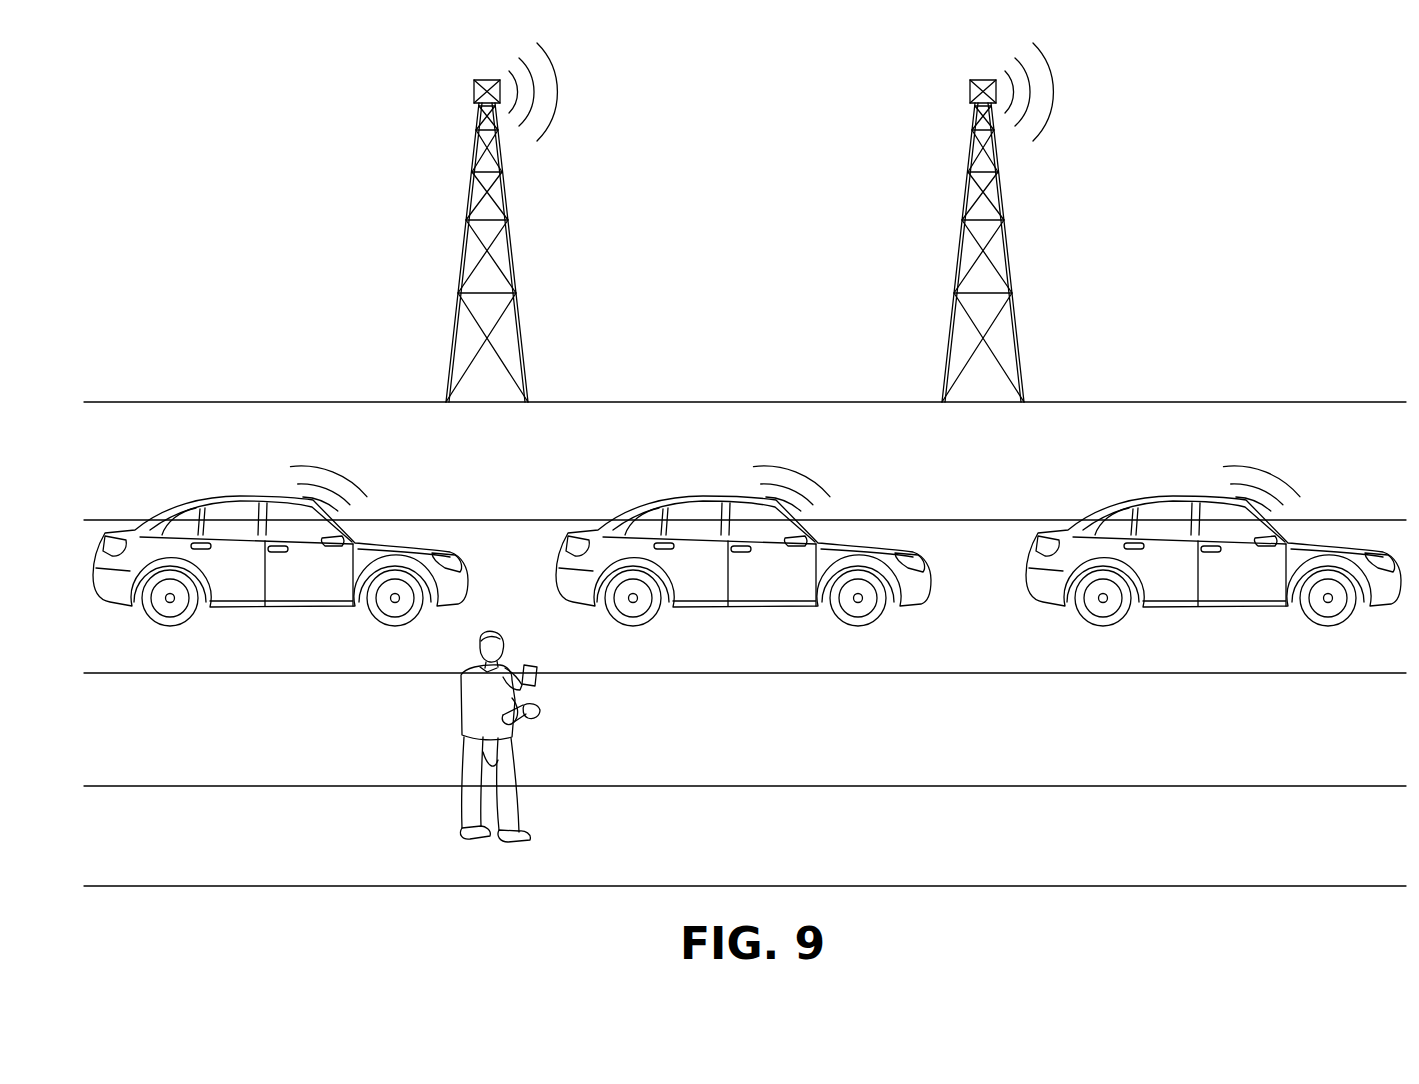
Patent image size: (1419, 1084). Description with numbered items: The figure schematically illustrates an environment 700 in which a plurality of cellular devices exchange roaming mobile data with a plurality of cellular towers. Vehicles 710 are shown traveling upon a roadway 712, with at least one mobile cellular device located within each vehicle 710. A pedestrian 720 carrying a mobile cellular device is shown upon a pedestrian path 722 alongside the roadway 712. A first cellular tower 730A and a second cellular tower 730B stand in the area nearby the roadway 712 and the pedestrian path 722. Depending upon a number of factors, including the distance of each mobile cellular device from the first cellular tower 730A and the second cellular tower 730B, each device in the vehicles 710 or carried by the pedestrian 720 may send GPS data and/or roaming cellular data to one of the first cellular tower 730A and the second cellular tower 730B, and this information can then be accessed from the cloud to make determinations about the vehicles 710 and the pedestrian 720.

The environment 700 is at (1183, 262).
The vehicle 710 is at (392, 540).
The roadway 712 is at (510, 555).
The pedestrian 720 is at (458, 720).
The pedestrian path 722 is at (612, 825).
The first cellular tower 730A is at (515, 262).
The second cellular tower 730B is at (1011, 262).